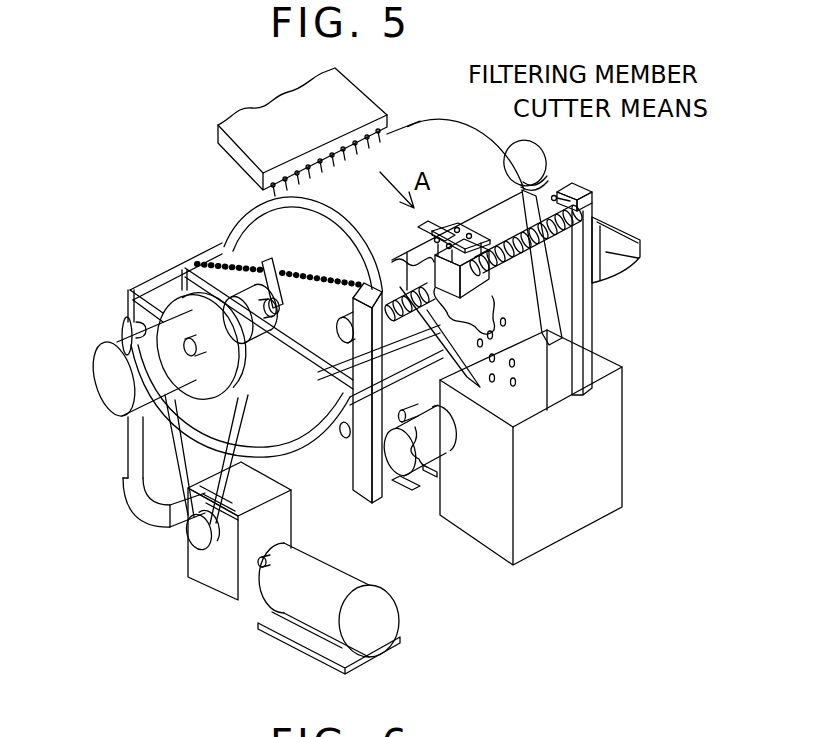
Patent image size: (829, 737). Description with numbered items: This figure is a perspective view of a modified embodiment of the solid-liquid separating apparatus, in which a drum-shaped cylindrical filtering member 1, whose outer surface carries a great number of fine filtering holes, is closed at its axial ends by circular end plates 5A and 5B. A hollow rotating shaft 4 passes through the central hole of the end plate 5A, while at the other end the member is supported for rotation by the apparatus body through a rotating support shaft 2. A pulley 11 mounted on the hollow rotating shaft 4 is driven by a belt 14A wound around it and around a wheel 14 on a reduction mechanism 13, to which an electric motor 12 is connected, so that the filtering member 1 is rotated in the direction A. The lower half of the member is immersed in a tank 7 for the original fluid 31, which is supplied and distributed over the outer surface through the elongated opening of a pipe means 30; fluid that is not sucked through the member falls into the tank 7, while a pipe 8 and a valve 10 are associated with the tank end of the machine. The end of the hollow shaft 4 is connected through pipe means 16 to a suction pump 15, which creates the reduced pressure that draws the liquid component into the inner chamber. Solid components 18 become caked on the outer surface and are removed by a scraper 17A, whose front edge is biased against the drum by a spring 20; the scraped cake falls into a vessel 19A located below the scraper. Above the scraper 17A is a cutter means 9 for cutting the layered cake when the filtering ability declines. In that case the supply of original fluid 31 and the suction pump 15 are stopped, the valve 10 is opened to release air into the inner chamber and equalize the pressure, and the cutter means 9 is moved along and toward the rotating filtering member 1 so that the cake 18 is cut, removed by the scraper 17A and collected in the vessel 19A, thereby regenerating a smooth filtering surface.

The filtering member 1 is at (374, 176).
The rotating support shaft 2 is at (535, 155).
The hollow rotating shaft 4 is at (192, 337).
The circular end plate 5A is at (331, 230).
The circular end plate 5B is at (430, 130).
The tank 7 is at (128, 292).
The pipe 8 is at (133, 461).
The cutter means 9 is at (452, 229).
The valve 10 is at (123, 330).
The pulley 11 is at (170, 307).
The electric motor 12 is at (293, 633).
The reduction mechanism 13 is at (217, 580).
The wheel 14 is at (193, 533).
The belt 14A is at (231, 486).
The suction pump 15 is at (395, 490).
The pipe means 16 is at (335, 440).
The scraper 17A is at (548, 172).
The solid components 18 is at (505, 213).
The vessel 19A is at (612, 437).
The spring 20 is at (220, 243).
The pipe means 30 is at (222, 152).
The original fluid 31 is at (263, 200).